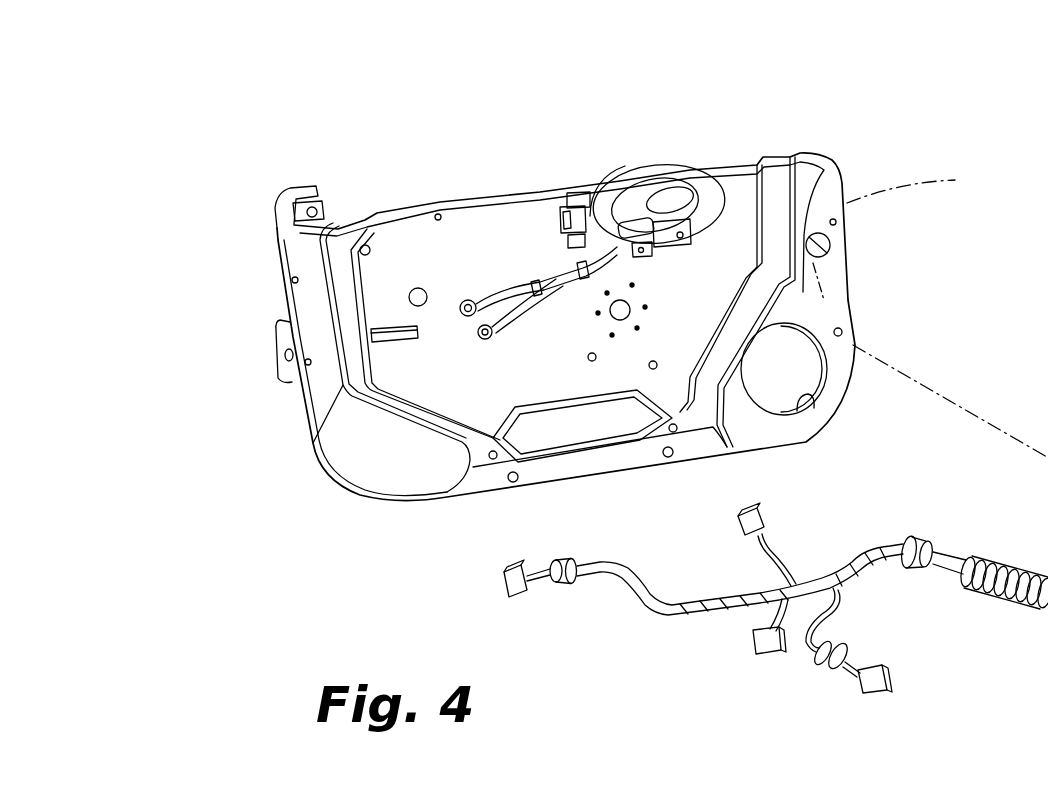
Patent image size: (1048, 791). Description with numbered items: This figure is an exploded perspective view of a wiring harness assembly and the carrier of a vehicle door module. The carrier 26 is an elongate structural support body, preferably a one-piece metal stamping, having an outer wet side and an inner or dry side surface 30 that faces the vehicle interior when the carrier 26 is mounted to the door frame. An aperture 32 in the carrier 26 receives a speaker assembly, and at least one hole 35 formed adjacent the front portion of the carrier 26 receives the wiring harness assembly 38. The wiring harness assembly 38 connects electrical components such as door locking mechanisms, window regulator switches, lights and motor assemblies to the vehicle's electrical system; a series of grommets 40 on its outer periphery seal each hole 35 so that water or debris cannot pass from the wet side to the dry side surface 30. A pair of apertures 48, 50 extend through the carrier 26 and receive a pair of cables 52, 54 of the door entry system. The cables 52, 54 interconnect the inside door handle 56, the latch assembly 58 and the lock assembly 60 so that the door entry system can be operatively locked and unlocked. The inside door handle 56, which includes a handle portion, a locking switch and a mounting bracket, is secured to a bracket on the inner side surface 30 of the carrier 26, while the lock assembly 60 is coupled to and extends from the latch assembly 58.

The carrier 26 is at (290, 436).
The inner or dry side surface 30 is at (342, 453).
The aperture 32 is at (810, 392).
The hole 35 is at (843, 205).
The wiring harness assembly 38 is at (666, 628).
The grommets 40 is at (1000, 598).
The aperture 48 is at (475, 297).
The aperture 50 is at (492, 340).
The cable 52 is at (512, 291).
The cable 54 is at (522, 316).
The inside door handle 56 is at (668, 161).
The latch assembly 58 is at (272, 339).
The lock assembly 60 is at (294, 183).